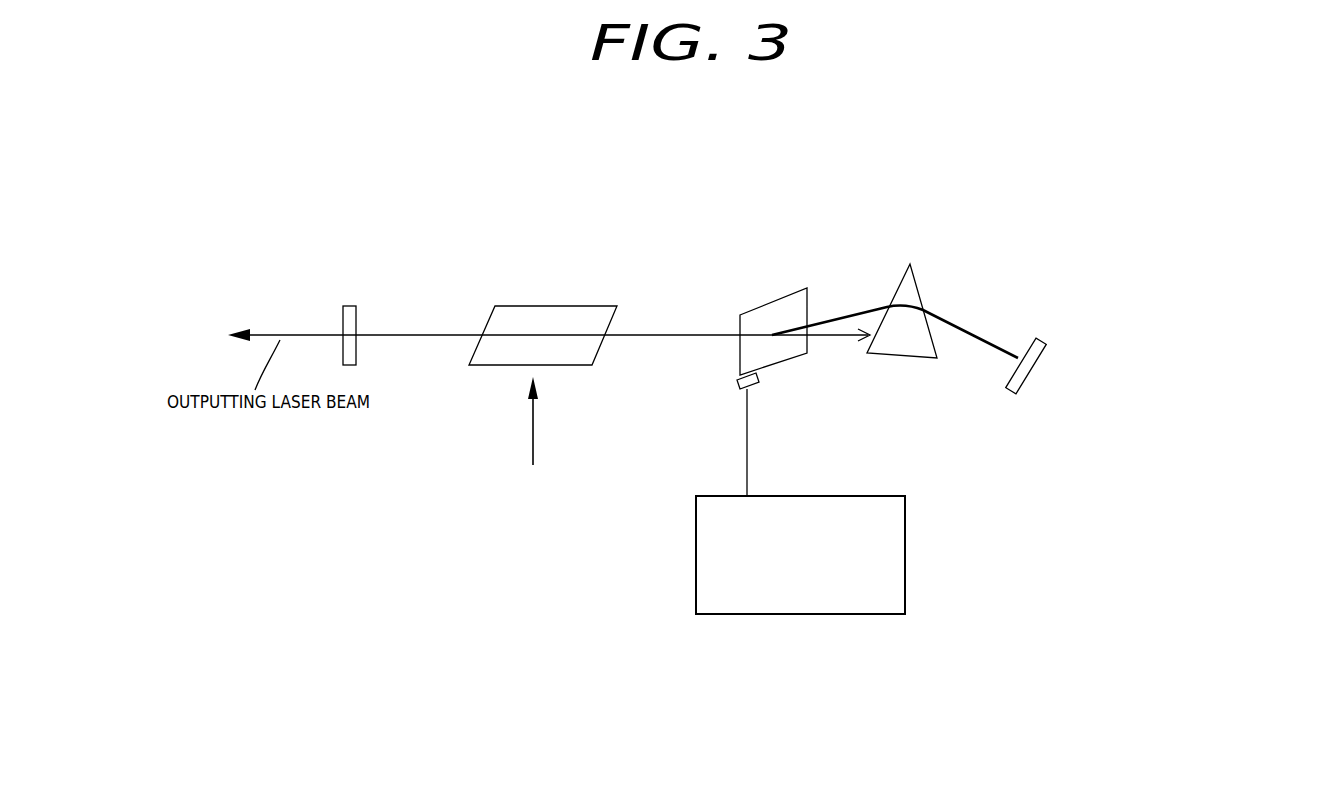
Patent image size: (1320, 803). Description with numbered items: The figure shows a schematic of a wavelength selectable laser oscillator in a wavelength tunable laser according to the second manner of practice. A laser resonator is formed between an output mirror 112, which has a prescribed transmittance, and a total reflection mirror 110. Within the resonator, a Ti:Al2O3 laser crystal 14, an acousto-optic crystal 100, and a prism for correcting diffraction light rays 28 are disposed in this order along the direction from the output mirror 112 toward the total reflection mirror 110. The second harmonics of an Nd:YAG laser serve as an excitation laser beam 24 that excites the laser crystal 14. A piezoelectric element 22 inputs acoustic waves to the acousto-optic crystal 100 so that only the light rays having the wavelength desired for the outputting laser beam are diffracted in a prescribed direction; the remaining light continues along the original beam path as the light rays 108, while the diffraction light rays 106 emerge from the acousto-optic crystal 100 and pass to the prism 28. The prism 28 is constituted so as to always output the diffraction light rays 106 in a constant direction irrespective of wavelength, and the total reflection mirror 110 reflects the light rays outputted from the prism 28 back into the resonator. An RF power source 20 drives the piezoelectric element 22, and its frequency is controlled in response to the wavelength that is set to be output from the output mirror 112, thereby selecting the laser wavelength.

The output mirror 112 is at (357, 318).
The Ti:Al2O3 laser crystal 14 is at (513, 315).
The excitation laser beam 24 is at (531, 418).
The acousto-optic crystal 100 is at (800, 317).
The zero-order transmitted laser beam 108 is at (827, 342).
The diffraction light rays 106 is at (858, 310).
The prism for correcting diffraction light rays 28 is at (905, 355).
The total reflection mirror 110 is at (1035, 357).
The piezoelectric element 22 is at (758, 383).
The RF power source 20 is at (890, 568).